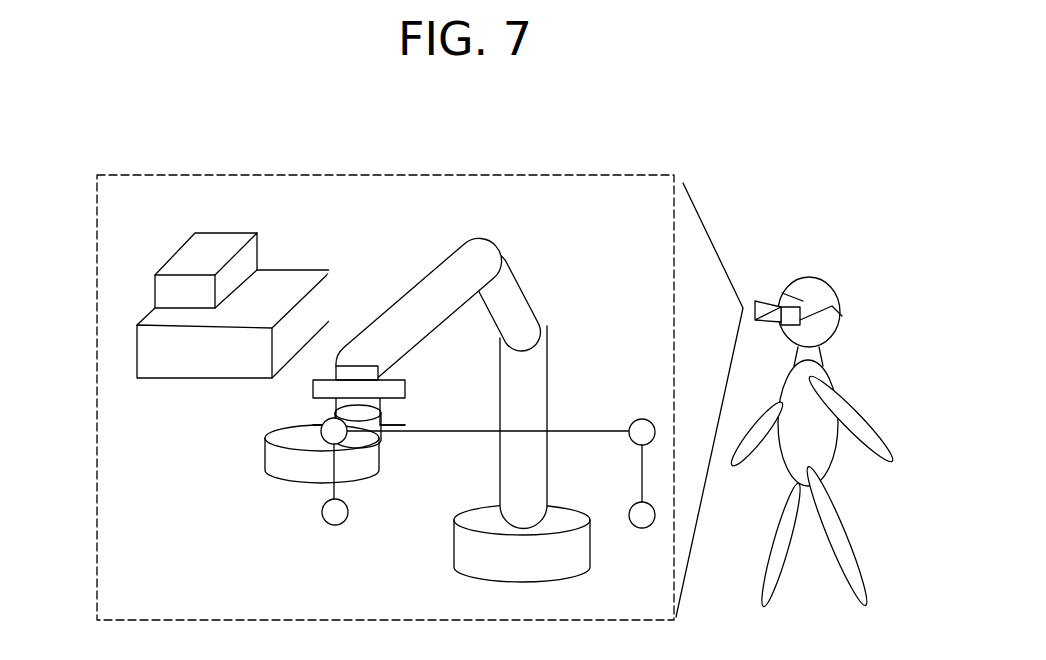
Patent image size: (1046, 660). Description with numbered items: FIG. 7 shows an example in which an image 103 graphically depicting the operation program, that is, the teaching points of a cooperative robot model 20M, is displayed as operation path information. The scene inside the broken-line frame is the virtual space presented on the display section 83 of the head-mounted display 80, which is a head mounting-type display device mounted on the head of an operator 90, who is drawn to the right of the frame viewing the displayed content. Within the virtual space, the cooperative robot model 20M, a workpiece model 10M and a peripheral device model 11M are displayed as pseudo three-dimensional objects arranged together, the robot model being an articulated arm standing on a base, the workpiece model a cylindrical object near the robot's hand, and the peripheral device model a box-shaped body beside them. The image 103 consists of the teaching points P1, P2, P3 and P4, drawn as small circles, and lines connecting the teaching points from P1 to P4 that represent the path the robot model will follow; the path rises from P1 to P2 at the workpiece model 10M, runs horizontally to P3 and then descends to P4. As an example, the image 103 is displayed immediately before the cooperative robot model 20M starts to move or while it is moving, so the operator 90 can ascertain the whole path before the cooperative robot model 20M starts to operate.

The display section 83 is at (467, 175).
The cooperative robot model 20M is at (522, 281).
The peripheral device model 11M is at (227, 378).
The workpiece model 10M is at (300, 484).
The image 103 is at (577, 429).
The teaching point P1 is at (347, 521).
The teaching point P2 is at (346, 440).
The teaching point P3 is at (632, 445).
The teaching point P4 is at (643, 529).
The head-mounted display 80 is at (767, 284).
The operator 90 is at (833, 463).